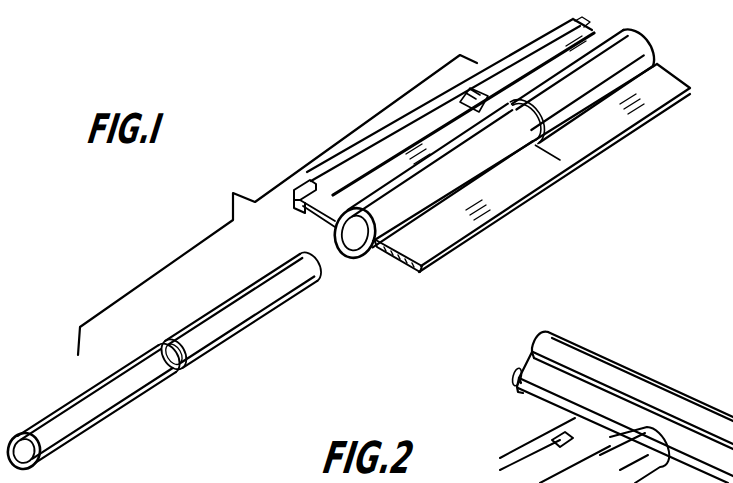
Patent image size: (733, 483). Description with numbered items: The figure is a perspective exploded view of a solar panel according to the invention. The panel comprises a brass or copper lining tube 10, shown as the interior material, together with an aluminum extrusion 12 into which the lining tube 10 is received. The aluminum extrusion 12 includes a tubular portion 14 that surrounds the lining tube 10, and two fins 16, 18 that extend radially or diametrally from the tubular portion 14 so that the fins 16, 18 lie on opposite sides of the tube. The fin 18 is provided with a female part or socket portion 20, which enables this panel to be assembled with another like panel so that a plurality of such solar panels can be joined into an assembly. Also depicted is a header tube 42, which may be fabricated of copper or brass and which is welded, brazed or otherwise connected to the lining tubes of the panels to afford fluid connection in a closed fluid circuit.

In FIG. 1, the lining tube 10 is at (58, 394).
In FIG. 1, the aluminum extrusion 12 is at (635, 137).
In FIG. 1, the tubular portion 14 is at (641, 43).
In FIG. 1, the fin 16 is at (428, 248).
In FIG. 1, the fin 18 is at (333, 197).
In FIG. 1, the socket portion 20 is at (297, 198).
In FIG. 2, the header tube 42 is at (662, 398).